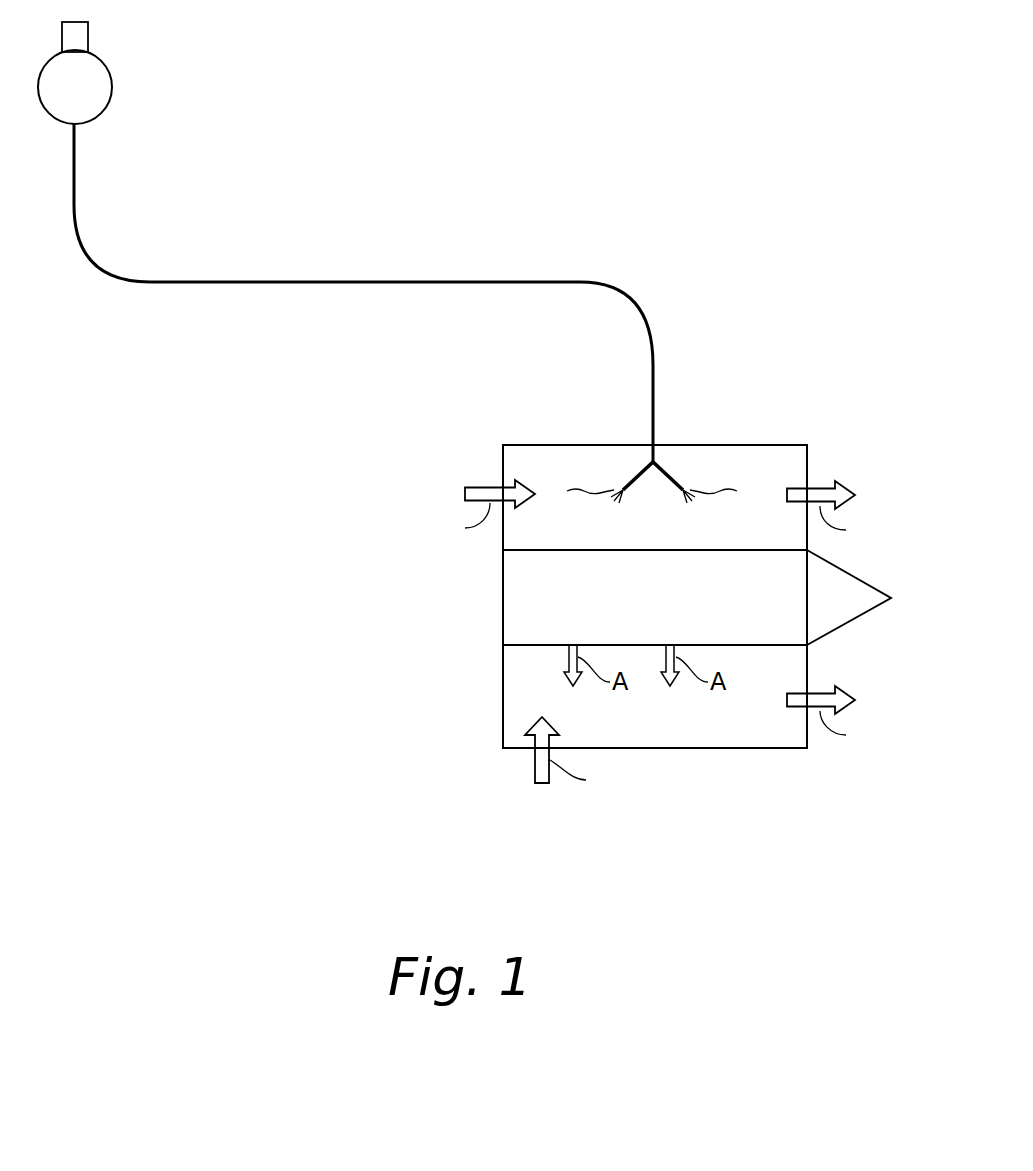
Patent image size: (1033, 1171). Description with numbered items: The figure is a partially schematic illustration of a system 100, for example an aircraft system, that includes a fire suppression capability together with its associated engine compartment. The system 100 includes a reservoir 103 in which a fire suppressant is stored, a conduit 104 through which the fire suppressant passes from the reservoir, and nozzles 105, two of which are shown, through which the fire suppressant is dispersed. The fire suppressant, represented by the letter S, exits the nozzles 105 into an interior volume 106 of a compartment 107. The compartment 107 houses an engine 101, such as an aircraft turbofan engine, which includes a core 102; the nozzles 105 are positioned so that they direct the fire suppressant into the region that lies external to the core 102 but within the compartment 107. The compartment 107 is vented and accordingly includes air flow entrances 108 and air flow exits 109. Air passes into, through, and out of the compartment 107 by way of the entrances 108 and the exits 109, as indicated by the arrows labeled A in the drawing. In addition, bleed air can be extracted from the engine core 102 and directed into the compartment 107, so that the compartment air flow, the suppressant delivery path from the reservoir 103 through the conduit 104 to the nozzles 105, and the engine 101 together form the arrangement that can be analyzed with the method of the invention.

The system 100 is at (700, 68).
The engine 101 is at (503, 610).
The core 102 is at (850, 576).
The reservoir 103 is at (113, 88).
The conduit 104 is at (305, 281).
The nozzles 105 is at (611, 486).
The interior volume 106 is at (520, 537).
The compartment 107 is at (713, 752).
The air flow entrances 108 is at (501, 483).
The air flow exits 109 is at (810, 487).